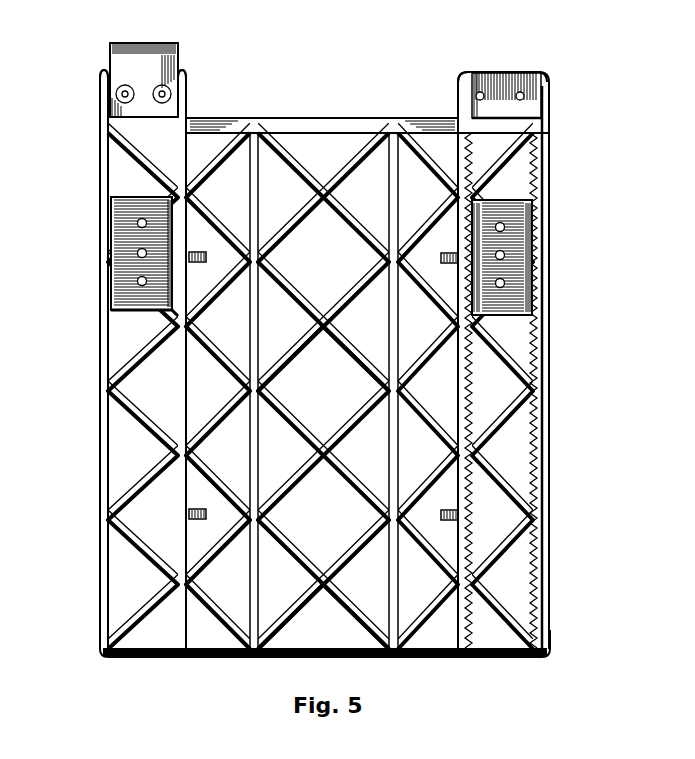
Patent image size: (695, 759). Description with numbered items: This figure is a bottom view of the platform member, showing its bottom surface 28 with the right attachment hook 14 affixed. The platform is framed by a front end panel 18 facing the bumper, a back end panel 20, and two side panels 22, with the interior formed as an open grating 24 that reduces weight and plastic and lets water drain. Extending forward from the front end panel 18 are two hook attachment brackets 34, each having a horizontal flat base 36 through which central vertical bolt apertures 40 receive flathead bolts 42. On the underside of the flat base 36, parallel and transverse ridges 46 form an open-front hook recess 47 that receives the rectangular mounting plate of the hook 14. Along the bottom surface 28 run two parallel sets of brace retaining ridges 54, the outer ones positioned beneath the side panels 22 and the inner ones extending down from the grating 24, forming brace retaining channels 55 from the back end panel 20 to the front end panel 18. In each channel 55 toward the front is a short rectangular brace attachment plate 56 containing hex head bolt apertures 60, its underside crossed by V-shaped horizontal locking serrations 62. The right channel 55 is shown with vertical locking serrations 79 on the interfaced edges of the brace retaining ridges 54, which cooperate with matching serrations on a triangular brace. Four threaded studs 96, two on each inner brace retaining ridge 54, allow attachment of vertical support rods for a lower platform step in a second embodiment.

The attachment hook 14 is at (168, 43).
The front end panel 18 is at (322, 128).
The back end panel 20 is at (400, 658).
The side panel 22 is at (99, 533).
The open grating 24 is at (352, 398).
The bottom surface 28 is at (310, 600).
The hook attachment bracket 34 is at (484, 76).
The flat base 36 is at (497, 108).
The vertical bolt aperture 40 is at (519, 91).
The flathead bolt 42 is at (118, 88).
The ridge 46 is at (110, 118).
The hook recess 47 is at (530, 78).
The brace retaining ridge 54 is at (182, 430).
The brace retaining channel 55 is at (143, 652).
The brace attachment plate 56 is at (110, 296).
The hex head bolt aperture 60 is at (142, 218).
The horizontal locking serration 62 is at (122, 277).
The vertical locking serration 79 is at (545, 477).
The threaded stud 96 is at (207, 250).